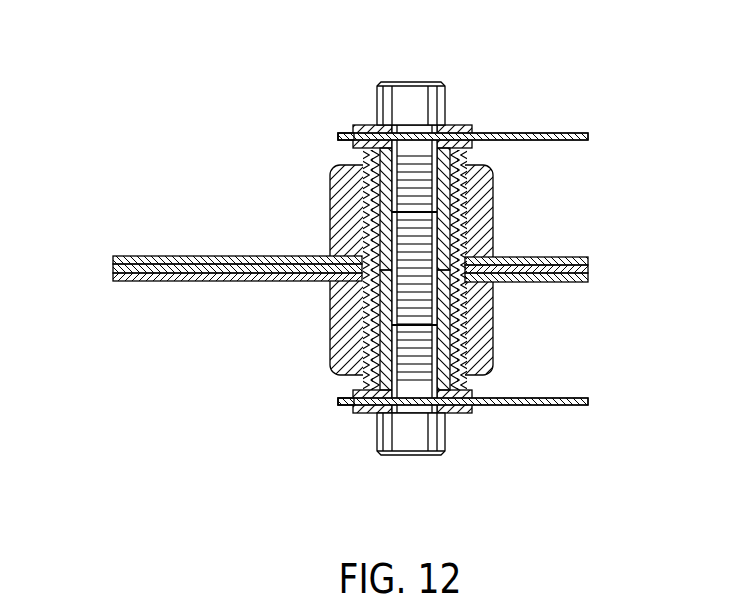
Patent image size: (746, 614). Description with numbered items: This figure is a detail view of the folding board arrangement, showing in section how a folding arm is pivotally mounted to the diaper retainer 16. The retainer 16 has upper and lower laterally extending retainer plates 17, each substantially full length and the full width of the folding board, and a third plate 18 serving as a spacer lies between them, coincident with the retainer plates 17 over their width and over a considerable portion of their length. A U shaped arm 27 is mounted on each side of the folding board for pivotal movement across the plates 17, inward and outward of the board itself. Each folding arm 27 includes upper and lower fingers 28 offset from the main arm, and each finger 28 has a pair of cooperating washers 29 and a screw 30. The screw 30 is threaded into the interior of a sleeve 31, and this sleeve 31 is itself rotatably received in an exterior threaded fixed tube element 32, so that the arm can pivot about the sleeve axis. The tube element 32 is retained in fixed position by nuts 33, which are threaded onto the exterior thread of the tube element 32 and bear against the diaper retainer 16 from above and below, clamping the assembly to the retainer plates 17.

The diaper retainer 16 is at (614, 273).
The retainer plates 17 is at (167, 255).
The third plate 18 is at (288, 273).
The U shaped arm 27 is at (563, 134).
The fingers 28 is at (338, 137).
The washers 29 is at (470, 150).
The screw 30 is at (423, 83).
The sleeve 31 is at (453, 240).
The tube element 32 is at (455, 323).
The nuts 33 is at (328, 187).